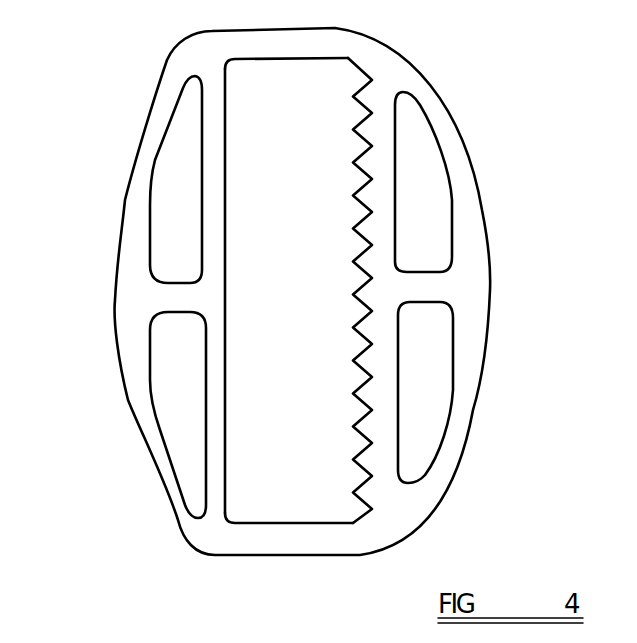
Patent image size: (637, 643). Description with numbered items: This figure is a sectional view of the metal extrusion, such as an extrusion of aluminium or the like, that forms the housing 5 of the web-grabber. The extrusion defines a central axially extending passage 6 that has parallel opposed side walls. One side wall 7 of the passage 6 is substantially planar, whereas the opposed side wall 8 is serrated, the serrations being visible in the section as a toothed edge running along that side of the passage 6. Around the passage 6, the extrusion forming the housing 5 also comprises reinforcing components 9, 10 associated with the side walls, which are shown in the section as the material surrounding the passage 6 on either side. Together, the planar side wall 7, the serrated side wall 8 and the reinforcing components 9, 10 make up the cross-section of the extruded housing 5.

The housing 5 is at (430, 91).
The central axially extending passage 6 is at (320, 167).
The side wall 7 is at (228, 405).
The opposed side wall 8 is at (357, 402).
The reinforcing component 9 is at (307, 308).
The reinforcing component 10 is at (470, 292).